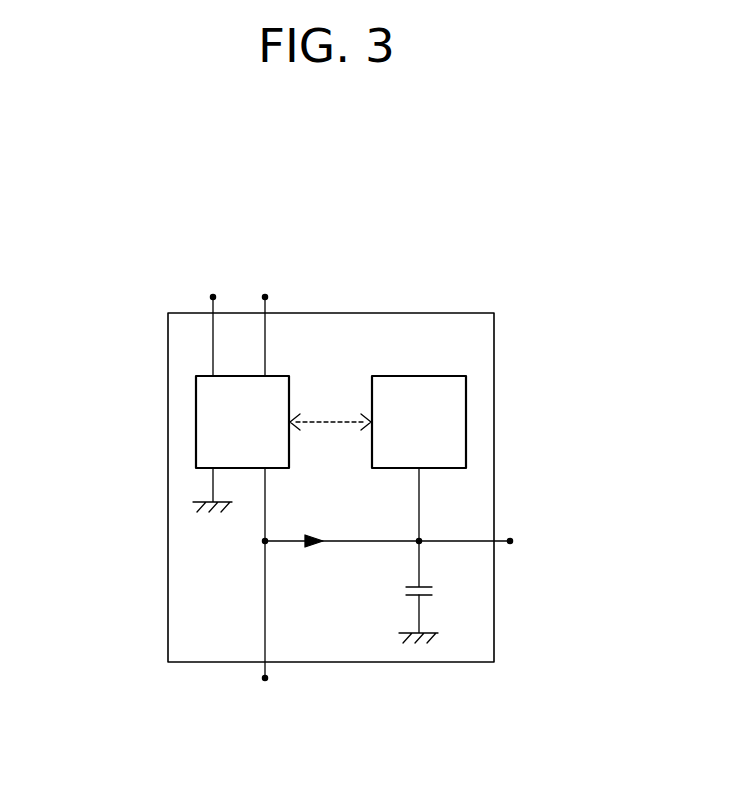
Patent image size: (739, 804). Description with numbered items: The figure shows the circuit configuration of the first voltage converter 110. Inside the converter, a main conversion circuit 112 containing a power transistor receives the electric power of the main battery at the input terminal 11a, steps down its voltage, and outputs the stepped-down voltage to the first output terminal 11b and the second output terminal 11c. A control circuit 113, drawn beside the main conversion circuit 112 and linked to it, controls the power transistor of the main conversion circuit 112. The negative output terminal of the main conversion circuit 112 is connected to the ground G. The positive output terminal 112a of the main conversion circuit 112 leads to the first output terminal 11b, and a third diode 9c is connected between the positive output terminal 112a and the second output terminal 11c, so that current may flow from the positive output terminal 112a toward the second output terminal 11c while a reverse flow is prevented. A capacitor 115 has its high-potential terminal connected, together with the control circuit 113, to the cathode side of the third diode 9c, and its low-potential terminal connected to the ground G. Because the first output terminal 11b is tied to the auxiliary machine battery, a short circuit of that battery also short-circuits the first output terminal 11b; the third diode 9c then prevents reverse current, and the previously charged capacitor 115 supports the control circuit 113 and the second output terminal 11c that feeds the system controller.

The first voltage converter 110 is at (114, 246).
The input terminal 11a is at (213, 297).
The main conversion circuit 112 is at (196, 405).
The control circuit 113 is at (466, 405).
The positive output terminal 112a is at (265, 541).
The first output terminal 11b is at (262, 680).
The second output terminal 11c is at (510, 541).
The third diode 9c is at (322, 545).
The capacitor 115 is at (424, 598).
The ground G is at (198, 508).